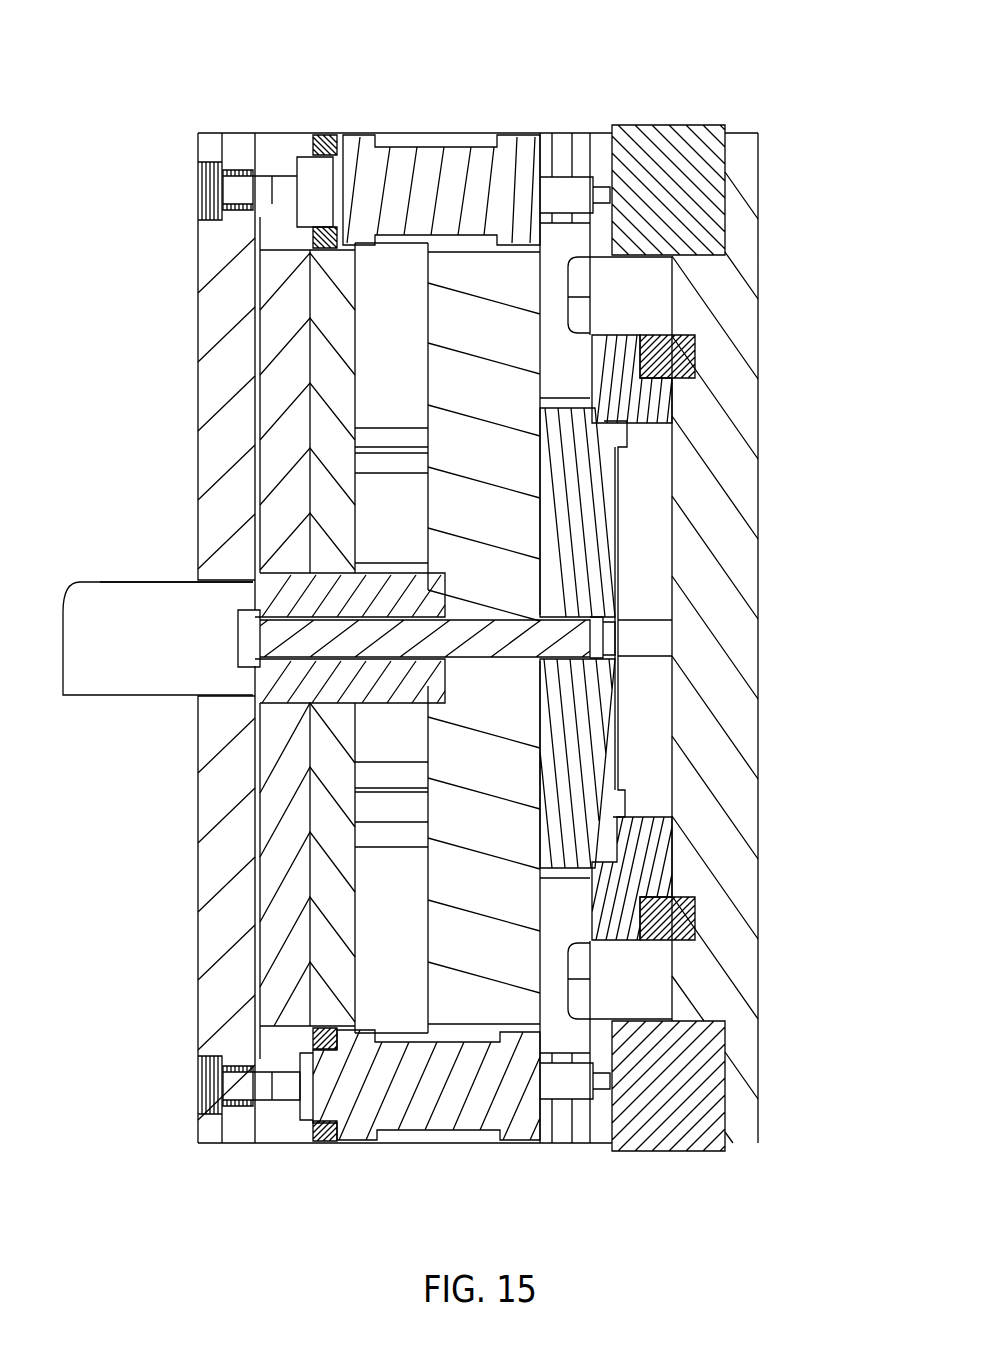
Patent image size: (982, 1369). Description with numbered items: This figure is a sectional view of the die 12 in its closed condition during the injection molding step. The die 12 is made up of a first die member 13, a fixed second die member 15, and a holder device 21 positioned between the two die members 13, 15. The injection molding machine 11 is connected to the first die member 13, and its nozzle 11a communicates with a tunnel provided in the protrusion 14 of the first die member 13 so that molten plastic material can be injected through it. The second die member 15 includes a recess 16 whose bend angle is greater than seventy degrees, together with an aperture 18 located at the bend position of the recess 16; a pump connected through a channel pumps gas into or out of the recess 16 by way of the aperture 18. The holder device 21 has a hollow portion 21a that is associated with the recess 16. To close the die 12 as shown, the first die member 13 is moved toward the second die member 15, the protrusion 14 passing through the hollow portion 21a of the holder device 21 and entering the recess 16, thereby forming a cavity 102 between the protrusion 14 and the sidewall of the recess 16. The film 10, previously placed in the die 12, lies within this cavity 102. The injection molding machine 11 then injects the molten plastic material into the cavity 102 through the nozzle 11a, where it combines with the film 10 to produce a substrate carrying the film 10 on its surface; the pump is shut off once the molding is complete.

The film 10 is at (620, 682).
The cavity 102 is at (620, 720).
The injection molding machine 11 is at (93, 581).
The nozzle 11a is at (155, 598).
The die 12 is at (429, 93).
The first die member 13 is at (406, 1147).
The protrusion 14 is at (575, 533).
The second die member 15 is at (758, 828).
The recess 16 is at (620, 578).
The aperture 18 is at (648, 425).
The holder device 21 is at (566, 1147).
The hollow portion 21a is at (580, 870).